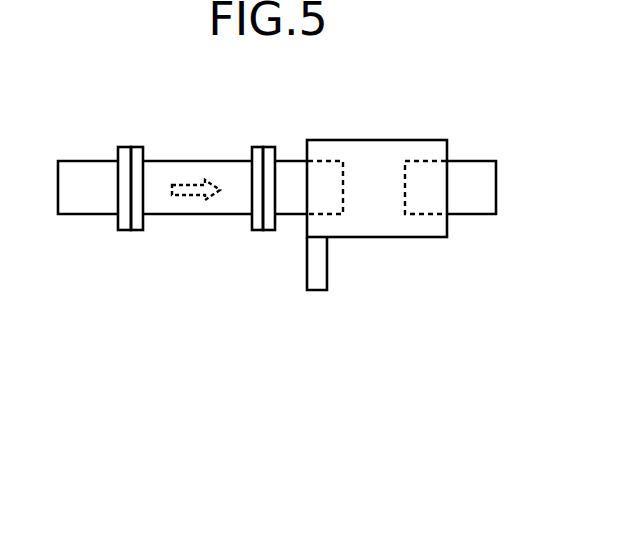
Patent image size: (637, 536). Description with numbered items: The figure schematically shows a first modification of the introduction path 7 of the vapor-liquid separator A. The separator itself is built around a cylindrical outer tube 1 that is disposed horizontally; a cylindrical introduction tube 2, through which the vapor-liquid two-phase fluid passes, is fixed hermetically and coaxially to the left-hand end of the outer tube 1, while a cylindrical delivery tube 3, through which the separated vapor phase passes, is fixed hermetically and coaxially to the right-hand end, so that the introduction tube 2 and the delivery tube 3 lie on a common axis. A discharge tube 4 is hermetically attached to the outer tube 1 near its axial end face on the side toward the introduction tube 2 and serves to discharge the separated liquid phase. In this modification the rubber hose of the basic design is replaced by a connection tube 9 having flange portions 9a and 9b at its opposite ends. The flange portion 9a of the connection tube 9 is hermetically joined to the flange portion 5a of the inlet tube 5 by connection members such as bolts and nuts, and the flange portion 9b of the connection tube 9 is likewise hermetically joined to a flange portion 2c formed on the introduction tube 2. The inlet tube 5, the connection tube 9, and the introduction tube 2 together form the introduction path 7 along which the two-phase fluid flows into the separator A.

The outer tube 1 is at (390, 140).
The introduction tube 2 is at (290, 161).
The flange portion 2c is at (270, 147).
The delivery tube 3 is at (463, 161).
The discharge tube 4 is at (327, 277).
The inlet tube 5 is at (90, 161).
The flange portion 5a is at (126, 147).
The introduction path 7 is at (170, 201).
The connection tube 9 is at (194, 161).
The flange portion 9a is at (137, 147).
The flange portion 9b is at (259, 147).
The vapor-liquid separator A is at (296, 291).